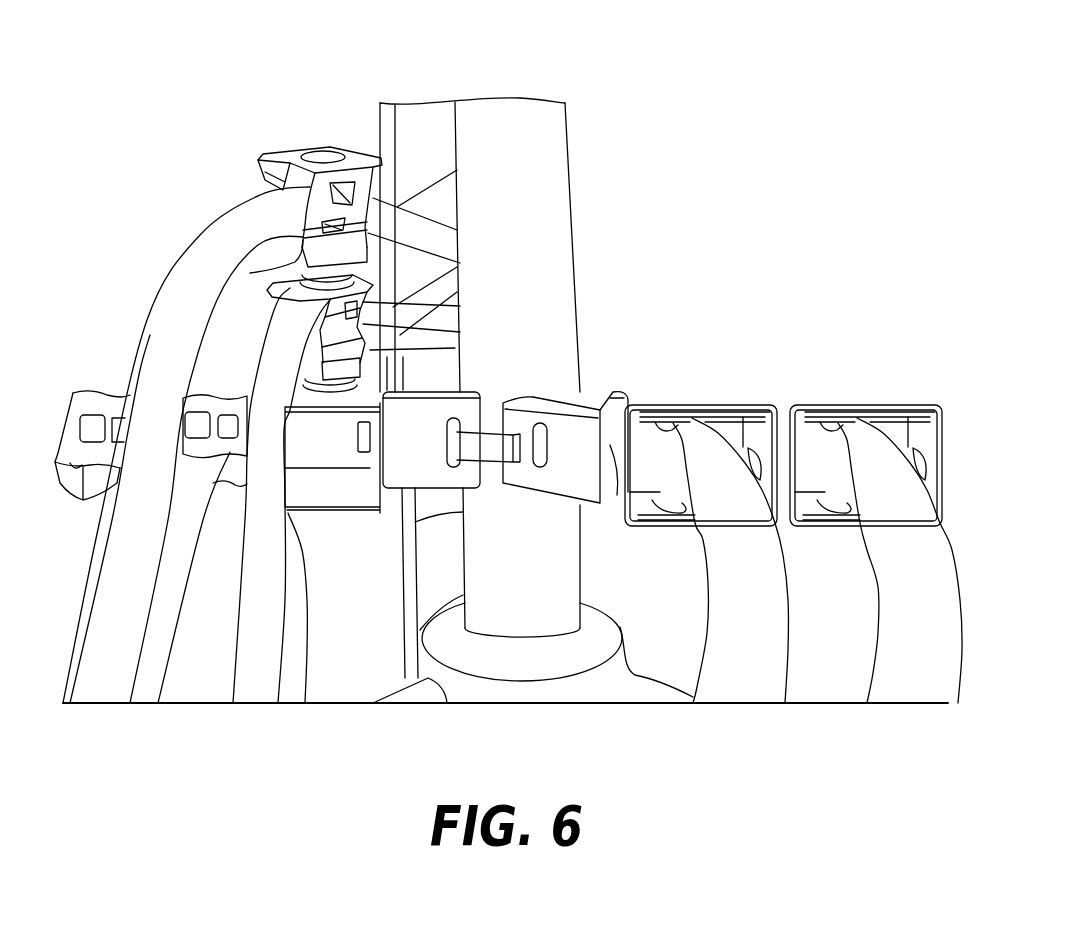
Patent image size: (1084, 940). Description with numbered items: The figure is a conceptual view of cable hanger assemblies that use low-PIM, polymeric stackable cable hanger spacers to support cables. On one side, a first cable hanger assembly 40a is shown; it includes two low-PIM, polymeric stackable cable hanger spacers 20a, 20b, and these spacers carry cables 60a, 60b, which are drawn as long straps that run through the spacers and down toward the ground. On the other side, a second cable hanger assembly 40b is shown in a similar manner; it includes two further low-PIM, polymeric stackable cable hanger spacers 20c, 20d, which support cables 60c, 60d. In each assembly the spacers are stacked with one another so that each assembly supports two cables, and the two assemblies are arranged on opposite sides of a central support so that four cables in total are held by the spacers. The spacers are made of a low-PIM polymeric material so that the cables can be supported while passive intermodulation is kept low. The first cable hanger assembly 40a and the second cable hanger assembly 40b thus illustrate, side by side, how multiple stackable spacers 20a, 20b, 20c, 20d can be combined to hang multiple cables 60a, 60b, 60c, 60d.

The first cable hanger assembly 40a is at (270, 98).
The second cable hanger assembly 40b is at (853, 248).
The low-PIM polymeric stackable cable hanger spacer 20a is at (317, 280).
The low-PIM polymeric stackable cable hanger spacer 20b is at (333, 387).
The low-PIM polymeric stackable cable hanger spacer 20c is at (779, 450).
The low-PIM polymeric stackable cable hanger spacer 20d is at (617, 398).
The cable 60a is at (230, 237).
The cable 60b is at (283, 352).
The cable 60c is at (858, 455).
The cable 60d is at (700, 455).